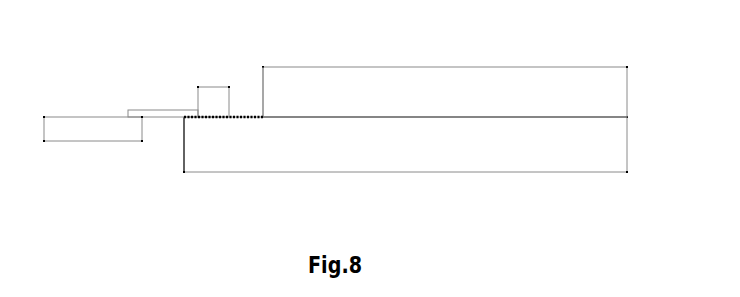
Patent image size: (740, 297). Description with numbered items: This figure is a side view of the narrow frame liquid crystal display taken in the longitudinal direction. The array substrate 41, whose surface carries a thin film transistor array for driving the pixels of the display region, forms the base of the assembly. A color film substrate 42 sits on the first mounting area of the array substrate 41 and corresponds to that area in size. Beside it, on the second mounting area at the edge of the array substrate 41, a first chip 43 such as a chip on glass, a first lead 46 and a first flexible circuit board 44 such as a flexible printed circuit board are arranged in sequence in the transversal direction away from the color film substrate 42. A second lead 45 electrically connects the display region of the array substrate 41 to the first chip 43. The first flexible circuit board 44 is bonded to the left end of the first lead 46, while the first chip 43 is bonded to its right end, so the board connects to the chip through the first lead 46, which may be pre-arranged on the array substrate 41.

The array substrate 41 is at (297, 153).
The color film substrate 42 is at (496, 81).
The first chip 43 is at (214, 94).
The first flexible circuit board 44 is at (147, 111).
The second lead 45 is at (242, 117).
The first lead 46 is at (200, 118).